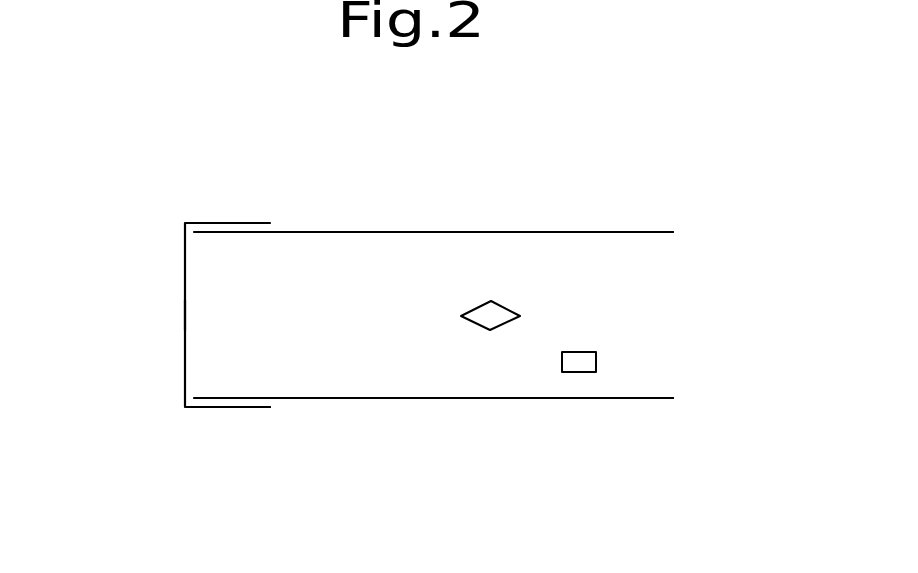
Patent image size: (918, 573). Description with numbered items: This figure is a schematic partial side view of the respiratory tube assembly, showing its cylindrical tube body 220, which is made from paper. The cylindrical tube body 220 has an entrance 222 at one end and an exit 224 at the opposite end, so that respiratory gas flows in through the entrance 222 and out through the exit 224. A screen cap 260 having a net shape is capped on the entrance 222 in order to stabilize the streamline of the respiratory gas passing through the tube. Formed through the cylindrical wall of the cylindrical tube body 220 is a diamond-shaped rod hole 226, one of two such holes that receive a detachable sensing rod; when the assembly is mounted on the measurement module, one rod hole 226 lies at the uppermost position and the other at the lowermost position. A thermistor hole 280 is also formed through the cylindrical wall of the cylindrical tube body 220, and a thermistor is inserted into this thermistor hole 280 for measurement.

The cylindrical tube body 220 is at (345, 199).
The entrance 222 is at (185, 312).
The exit 224 is at (660, 282).
The rod hole 226 is at (477, 302).
The screen cap 260 is at (222, 408).
The thermistor hole 280 is at (578, 352).